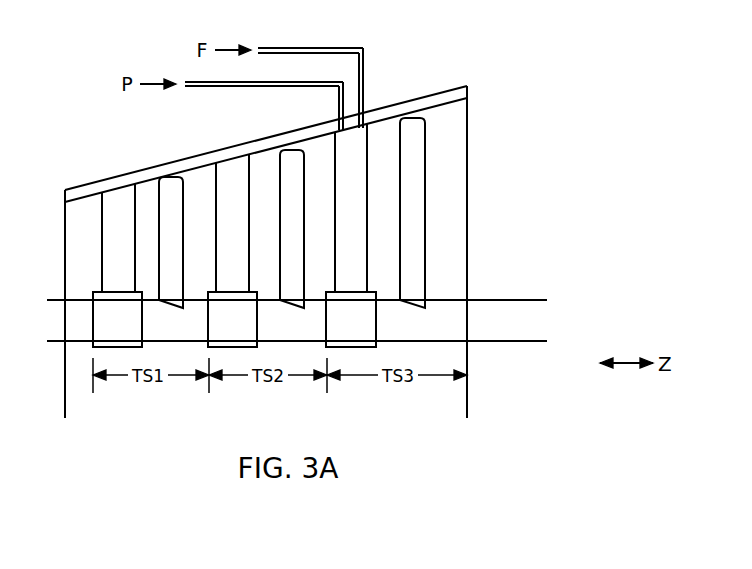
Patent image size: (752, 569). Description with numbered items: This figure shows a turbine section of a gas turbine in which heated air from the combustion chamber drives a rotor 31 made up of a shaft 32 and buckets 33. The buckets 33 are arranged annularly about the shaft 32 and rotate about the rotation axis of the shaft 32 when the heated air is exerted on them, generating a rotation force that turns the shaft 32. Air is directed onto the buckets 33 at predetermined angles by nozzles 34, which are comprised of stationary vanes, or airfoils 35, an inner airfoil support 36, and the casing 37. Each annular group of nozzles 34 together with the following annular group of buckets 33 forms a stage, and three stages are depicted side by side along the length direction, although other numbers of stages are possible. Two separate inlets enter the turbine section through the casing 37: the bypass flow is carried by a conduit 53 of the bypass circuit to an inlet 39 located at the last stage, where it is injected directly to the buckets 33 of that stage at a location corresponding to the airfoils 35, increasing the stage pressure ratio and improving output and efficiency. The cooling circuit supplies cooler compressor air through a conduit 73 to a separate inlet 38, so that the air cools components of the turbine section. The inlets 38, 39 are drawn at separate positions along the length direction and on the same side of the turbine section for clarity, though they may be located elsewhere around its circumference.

The rotor 31 is at (138, 274).
The shaft 32 is at (72, 317).
The buckets 33 is at (167, 190).
The nozzles 34 is at (364, 210).
The stationary vanes, or airfoils 35 is at (355, 262).
The inner airfoil support 36 is at (357, 319).
The casing 37 is at (455, 97).
The inlet 38 is at (340, 120).
The inlet 39 is at (363, 113).
The conduit 53 is at (338, 48).
The conduit 73 is at (236, 88).